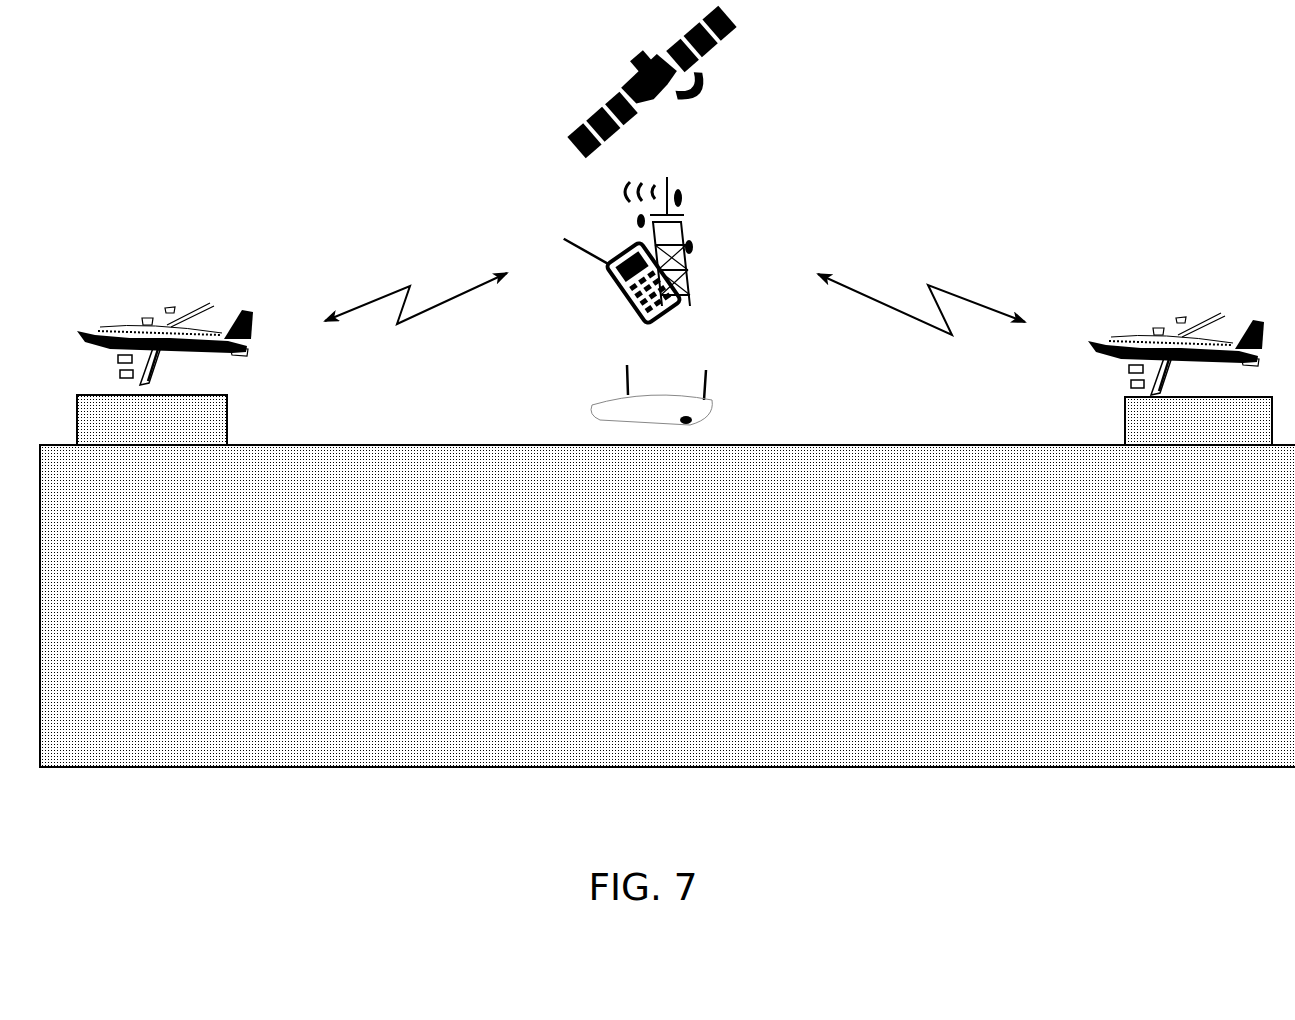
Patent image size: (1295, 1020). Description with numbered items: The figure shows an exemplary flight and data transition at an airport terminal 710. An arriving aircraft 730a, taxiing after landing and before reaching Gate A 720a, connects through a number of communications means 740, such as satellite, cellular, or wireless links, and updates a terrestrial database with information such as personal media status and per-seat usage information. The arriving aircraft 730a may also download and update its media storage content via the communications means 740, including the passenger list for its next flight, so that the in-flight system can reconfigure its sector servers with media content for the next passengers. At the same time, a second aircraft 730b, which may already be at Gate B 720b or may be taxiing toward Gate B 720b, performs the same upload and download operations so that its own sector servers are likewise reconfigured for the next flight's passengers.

The airport terminal 710 is at (1062, 674).
The Gate A 720a is at (175, 434).
The Gate B 720b is at (1223, 434).
The aircraft 730a is at (100, 312).
The aircraft 730b is at (1235, 312).
The communications means 740 is at (753, 383).